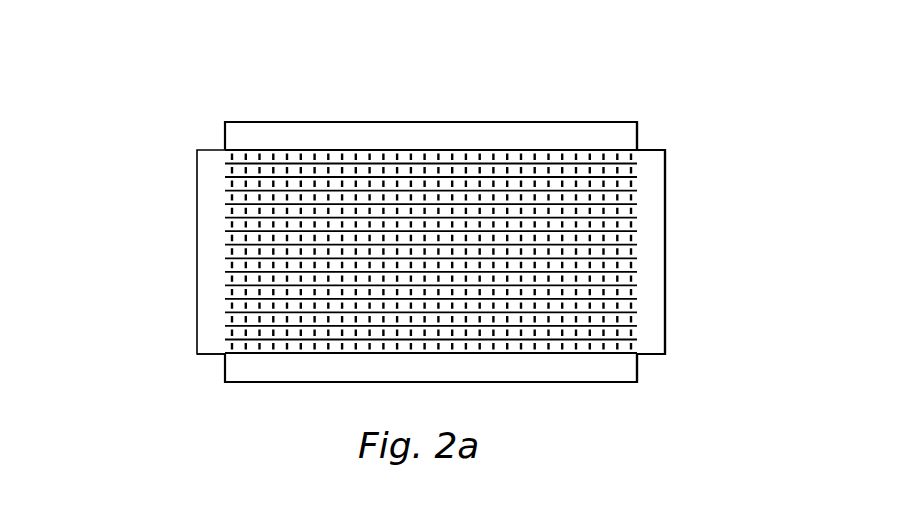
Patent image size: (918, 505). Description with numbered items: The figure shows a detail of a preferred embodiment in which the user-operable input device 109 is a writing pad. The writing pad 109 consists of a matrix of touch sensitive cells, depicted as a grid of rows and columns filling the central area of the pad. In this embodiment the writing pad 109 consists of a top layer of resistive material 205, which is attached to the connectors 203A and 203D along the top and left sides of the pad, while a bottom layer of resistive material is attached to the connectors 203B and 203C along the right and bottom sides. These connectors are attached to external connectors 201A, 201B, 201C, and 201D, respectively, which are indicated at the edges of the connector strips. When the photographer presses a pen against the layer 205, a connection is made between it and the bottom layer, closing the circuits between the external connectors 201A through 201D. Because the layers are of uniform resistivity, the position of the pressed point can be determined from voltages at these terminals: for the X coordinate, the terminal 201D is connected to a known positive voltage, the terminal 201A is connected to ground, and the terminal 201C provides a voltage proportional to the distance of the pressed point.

The writing pad 109 is at (652, 55).
The external connector 201A is at (640, 128).
The external connector 201B is at (667, 175).
The external connector 201C is at (638, 368).
The external connector 201D is at (212, 355).
The connector 203A is at (283, 135).
The connector 203B is at (667, 238).
The connector 203C is at (303, 377).
The connector 203D is at (205, 217).
The top layer of resistive material 205 is at (452, 170).